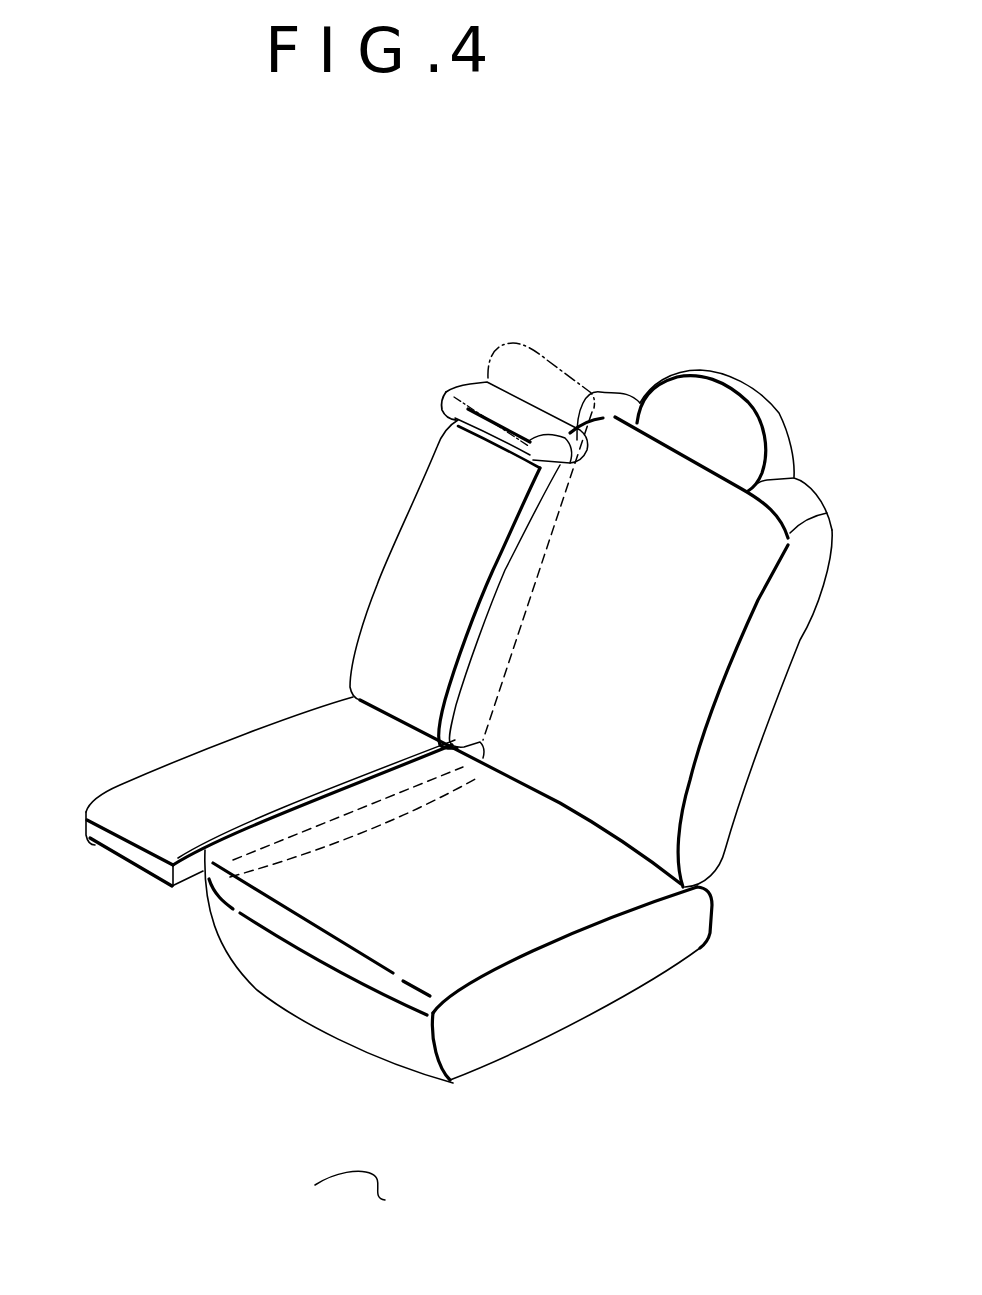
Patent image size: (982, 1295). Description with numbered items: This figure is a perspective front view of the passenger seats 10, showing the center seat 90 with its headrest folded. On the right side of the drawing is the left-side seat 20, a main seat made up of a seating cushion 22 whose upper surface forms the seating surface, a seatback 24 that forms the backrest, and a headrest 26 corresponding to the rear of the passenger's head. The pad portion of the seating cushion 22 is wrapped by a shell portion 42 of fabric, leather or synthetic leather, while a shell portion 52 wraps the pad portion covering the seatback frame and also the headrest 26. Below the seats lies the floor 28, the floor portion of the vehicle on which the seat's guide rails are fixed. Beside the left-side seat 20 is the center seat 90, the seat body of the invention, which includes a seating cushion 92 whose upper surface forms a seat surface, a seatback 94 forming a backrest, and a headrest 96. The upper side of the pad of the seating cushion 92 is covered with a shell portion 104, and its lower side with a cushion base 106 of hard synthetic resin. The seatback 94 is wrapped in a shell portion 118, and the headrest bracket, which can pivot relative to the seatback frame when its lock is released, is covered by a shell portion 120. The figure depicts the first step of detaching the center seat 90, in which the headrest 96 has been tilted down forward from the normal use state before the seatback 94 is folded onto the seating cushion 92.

The passenger seats 10 is at (220, 345).
The left-side seat 20 is at (211, 967).
The seating cushion 22 is at (300, 986).
The seatback 24 is at (548, 767).
The headrest 26 is at (738, 386).
The floor 28 is at (385, 1200).
The shell portion 42 is at (397, 948).
The shell portion 52 is at (613, 785).
The center seat 90 is at (104, 874).
The seating cushion 92 is at (211, 742).
The seatback 94 is at (388, 552).
The headrest 96 is at (452, 392).
The shell portion 104 is at (268, 738).
The cushion base 106 is at (158, 887).
The shell portion 118 is at (440, 486).
The shell portion 120 is at (456, 420).